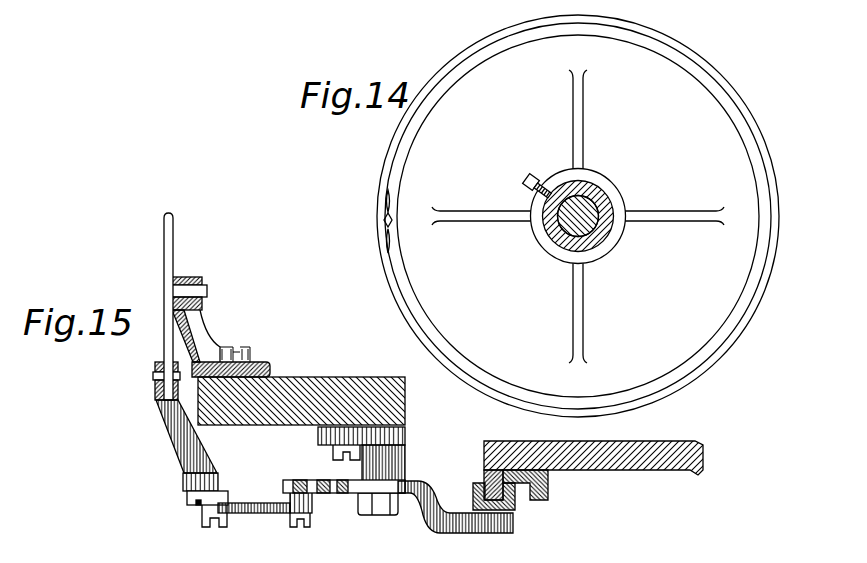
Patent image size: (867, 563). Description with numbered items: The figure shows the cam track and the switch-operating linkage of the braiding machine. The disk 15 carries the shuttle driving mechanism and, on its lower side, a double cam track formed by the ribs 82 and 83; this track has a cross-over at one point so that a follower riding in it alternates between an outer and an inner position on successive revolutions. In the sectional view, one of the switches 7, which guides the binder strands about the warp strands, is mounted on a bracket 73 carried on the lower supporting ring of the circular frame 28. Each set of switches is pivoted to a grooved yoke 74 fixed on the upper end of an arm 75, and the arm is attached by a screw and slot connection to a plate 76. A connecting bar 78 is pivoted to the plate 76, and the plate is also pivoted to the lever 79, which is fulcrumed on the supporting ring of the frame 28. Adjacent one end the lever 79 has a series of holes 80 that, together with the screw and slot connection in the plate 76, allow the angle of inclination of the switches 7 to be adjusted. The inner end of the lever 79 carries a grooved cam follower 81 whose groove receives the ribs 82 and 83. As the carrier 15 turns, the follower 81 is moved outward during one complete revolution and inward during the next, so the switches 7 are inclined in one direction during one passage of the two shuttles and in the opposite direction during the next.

In FIG. 15, the switch 7 is at (174, 237).
In FIG. 14, the disk 15 is at (578, 216).
In FIG. 15, the disk 15 is at (628, 476).
In FIG. 15, the circular frame 28 is at (314, 377).
In FIG. 15, the bracket 73 is at (203, 333).
In FIG. 15, the grooved yoke 74 is at (154, 393).
In FIG. 15, the arm 75 is at (172, 440).
In FIG. 15, the plate 76 is at (183, 490).
In FIG. 15, the connecting bar 78 is at (250, 517).
In FIG. 15, the lever 79 is at (425, 520).
In FIG. 15, the series of holes 80 is at (342, 480).
In FIG. 15, the grooved cam follower 81 is at (514, 506).
In FIG. 14, the rib 82 is at (393, 273).
In FIG. 15, the rib 82 is at (484, 477).
In FIG. 14, the rib 83 is at (405, 269).
In FIG. 15, the rib 83 is at (548, 488).